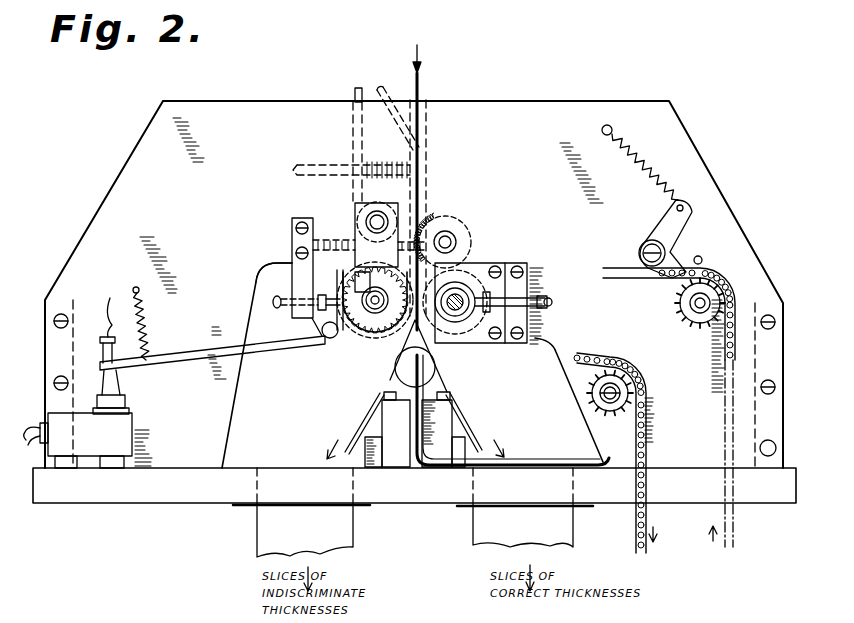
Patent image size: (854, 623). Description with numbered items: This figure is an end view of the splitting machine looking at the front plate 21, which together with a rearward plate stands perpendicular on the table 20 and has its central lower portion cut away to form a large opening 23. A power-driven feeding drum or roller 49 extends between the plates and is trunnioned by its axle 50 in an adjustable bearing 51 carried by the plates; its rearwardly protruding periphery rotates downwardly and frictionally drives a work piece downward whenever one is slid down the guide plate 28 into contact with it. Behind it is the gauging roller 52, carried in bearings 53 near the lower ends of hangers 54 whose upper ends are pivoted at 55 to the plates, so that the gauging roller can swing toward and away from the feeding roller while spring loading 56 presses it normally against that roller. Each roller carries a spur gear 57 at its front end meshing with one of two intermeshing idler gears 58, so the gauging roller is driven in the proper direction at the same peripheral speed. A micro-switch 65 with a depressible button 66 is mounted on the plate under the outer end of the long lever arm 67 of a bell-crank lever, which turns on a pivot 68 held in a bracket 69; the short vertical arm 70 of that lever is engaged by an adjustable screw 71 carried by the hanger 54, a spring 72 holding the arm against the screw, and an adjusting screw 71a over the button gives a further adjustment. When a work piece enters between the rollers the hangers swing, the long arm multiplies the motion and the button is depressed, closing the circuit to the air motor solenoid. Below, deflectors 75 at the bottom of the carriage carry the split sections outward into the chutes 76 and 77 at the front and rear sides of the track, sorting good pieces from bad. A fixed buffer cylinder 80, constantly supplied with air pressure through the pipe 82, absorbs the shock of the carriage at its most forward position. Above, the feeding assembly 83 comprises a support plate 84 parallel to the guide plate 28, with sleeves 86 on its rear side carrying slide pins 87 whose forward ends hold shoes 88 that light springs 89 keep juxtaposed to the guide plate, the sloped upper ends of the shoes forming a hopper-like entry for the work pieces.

The table 20 is at (757, 500).
The plate 21 is at (537, 110).
The opening 23 is at (232, 429).
The guide plate 28 is at (428, 122).
The feeding drum or roller 49 is at (500, 262).
The axle 50 is at (462, 312).
The adjustable bearing 51 is at (488, 326).
The gauging roller 52 is at (378, 334).
The bearing 53 is at (413, 322).
The hanger 54 is at (355, 209).
The pivot 55 is at (377, 211).
The spring loading 56 is at (316, 298).
The spur gear 57 is at (355, 337).
The idler gear 58 is at (425, 212).
The micro-switch 65 is at (128, 428).
The depressible button 66 is at (126, 392).
The long lever arm 67 is at (208, 347).
The pivot 68 is at (323, 335).
The bracket 69 is at (300, 327).
The short vertical arm 70 is at (300, 263).
The adjustable screw 71 is at (355, 287).
The adjusting screw 71a is at (113, 316).
The spring 72 is at (148, 322).
The deflector 75 is at (362, 440).
The chute 76 is at (580, 532).
The chute 77 is at (257, 526).
The fixed cylinder 80 is at (405, 382).
The pipe 82 is at (522, 466).
The feeding assembly 83 is at (361, 80).
The support plate 84 is at (353, 95).
The sleeve 86 is at (313, 225).
The slide pin 87 is at (300, 165).
The shoe 88 is at (415, 166).
The light spring 89 is at (393, 163).